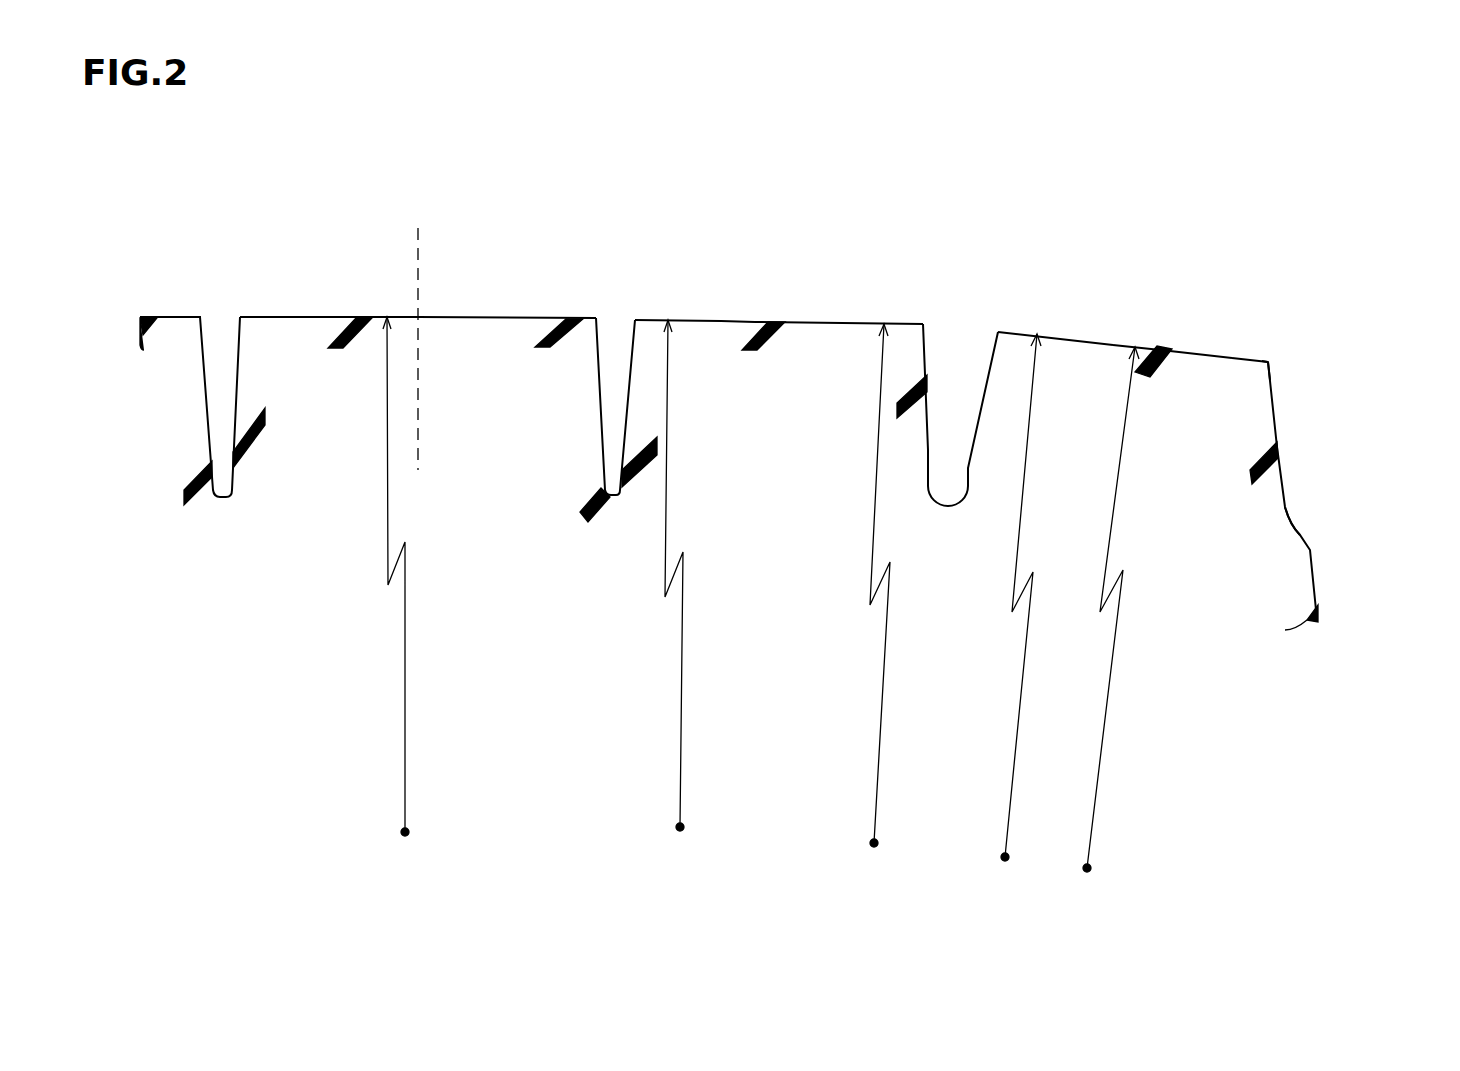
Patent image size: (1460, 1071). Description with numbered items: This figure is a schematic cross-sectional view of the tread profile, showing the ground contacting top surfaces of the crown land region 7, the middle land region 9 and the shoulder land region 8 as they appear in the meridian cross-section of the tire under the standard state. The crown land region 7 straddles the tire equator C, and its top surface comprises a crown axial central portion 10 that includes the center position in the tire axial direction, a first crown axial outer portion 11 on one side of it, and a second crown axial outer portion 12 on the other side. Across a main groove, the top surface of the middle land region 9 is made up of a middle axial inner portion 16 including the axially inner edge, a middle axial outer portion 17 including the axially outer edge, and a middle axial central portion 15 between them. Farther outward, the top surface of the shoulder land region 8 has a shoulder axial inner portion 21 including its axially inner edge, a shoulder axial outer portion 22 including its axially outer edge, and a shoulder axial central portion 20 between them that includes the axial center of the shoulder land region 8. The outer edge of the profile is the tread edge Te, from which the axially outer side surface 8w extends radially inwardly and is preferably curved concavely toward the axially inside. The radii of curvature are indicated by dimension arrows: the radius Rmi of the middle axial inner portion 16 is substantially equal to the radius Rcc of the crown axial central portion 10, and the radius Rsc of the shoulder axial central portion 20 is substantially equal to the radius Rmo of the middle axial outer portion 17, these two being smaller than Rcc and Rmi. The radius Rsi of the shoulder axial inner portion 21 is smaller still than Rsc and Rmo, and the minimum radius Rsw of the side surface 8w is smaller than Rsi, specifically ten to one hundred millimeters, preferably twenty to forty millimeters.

The crown land region 7 is at (353, 317).
The shoulder land region 8 is at (1170, 348).
The axially outer side surface 8w is at (1287, 505).
The middle land region 9 is at (721, 320).
The crown axial central portion 10 is at (443, 317).
The first crown axial outer portion 11 is at (537, 317).
The second crown axial outer portion 12 is at (302, 317).
The middle axial central portion 15 is at (755, 322).
The middle axial inner portion 16 is at (648, 320).
The middle axial outer portion 17 is at (903, 324).
The shoulder axial central portion 20 is at (1115, 343).
The shoulder axial inner portion 21 is at (1020, 332).
The shoulder axial outer portion 22 is at (1232, 358).
The tire equator C is at (417, 333).
The tread edge Te is at (1270, 362).
The radius of curvature of the crown axial central portion Rcc is at (376, 576).
The radius of curvature of the middle axial inner portion Rmi is at (650, 575).
The radius of curvature of the middle axial outer portion Rmo is at (849, 585).
The radius of curvature of the shoulder axial inner portion Rsi is at (1003, 597).
The radius of curvature of the shoulder axial central portion Rsc is at (1125, 609).
The minimum radius of curvature of the side surface Rsw is at (1295, 525).